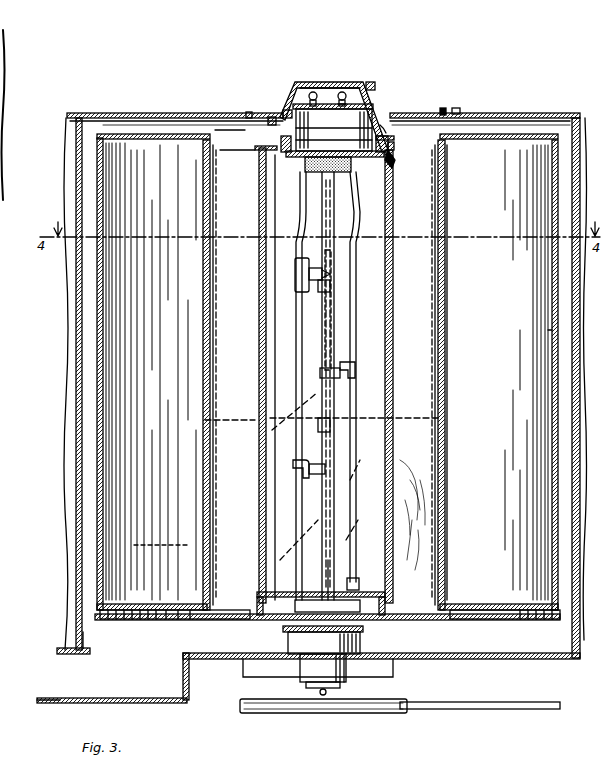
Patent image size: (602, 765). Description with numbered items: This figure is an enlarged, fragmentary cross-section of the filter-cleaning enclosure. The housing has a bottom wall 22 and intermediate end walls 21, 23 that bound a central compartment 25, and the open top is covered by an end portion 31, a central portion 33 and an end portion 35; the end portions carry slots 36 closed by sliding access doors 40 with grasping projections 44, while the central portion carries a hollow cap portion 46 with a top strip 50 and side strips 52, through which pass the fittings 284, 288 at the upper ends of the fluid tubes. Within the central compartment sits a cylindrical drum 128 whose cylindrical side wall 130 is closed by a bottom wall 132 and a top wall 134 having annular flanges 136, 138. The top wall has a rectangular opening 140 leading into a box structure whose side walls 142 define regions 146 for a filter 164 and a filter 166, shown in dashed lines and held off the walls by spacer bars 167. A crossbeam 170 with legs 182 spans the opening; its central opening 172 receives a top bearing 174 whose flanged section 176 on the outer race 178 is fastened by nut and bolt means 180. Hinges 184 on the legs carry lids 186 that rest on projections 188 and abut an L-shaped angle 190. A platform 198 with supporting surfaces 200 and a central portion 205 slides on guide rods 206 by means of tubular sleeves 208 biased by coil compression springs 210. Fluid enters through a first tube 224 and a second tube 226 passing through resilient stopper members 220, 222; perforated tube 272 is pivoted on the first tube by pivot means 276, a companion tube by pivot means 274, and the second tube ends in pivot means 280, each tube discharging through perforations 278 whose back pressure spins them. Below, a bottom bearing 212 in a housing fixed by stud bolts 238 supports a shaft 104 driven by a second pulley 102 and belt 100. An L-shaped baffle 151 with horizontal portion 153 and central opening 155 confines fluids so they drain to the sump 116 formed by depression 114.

The intermediate end wall 21 is at (76, 500).
The bottom wall 22 is at (484, 653).
The intermediate end wall 23 is at (572, 525).
The central compartment 25 is at (76, 550).
The end portion 31 is at (97, 113).
The central portion 33 is at (305, 76).
The end portion 35 is at (512, 113).
The slot 36 is at (249, 112).
The access door 40 is at (238, 128).
The projection 44 is at (271, 116).
The cap portion 46 is at (376, 108).
The top strip 50 is at (313, 92).
The side strip 52 is at (287, 110).
The belt 100 is at (472, 712).
The second pulley 102 is at (360, 714).
The shaft 104 is at (303, 686).
The depression 114 is at (187, 700).
The sump 116 is at (95, 690).
The cylindrical drum 128 is at (547, 340).
The cylindrical side wall 130 is at (556, 428).
The bottom wall 132 is at (484, 606).
The top wall 134 is at (512, 140).
The annular flange 136 is at (114, 620).
The annular flange 138 is at (148, 140).
The rectangular opening 140 is at (446, 148).
The side wall 142 is at (205, 322).
The region 146 is at (210, 274).
The baffle 151 is at (92, 640).
The horizontal portion 153 is at (78, 602).
The central opening 155 is at (97, 590).
The filter 164 is at (425, 530).
The filter 166 is at (228, 548).
The spacer bar 167 is at (208, 340).
The crossbeam 170 is at (284, 142).
The central opening 172 is at (392, 182).
The top bearing 174 is at (372, 107).
The flanged section 176 is at (335, 133).
The outer race 178 is at (388, 136).
The nut and bolt means 180 is at (394, 148).
The leg 182 is at (306, 168).
The hinge 184 is at (262, 145).
The lid 186 is at (225, 124).
The projection 188 is at (222, 142).
The angle 190 is at (210, 132).
The platform 198 is at (435, 422).
The supporting surface 200 is at (228, 616).
The central portion 205 is at (355, 578).
The guide rod 206 is at (335, 204).
The tubular sleeve 208 is at (320, 560).
The coil compression spring 210 is at (336, 226).
The bottom bearing 212 is at (286, 640).
The stopper member 220 is at (358, 170).
The stopper member 222 is at (383, 126).
The first tube 224 is at (308, 192).
The second tube 226 is at (332, 274).
The stud bolt 238 is at (356, 670).
The perforated tube 272 is at (330, 505).
The pivot means 274 is at (298, 278).
The pivot means 276 is at (300, 482).
The perforation 278 is at (331, 286).
The pivot means 280 is at (350, 380).
The outlet port 284 is at (342, 92).
The port stem 288 is at (344, 100).